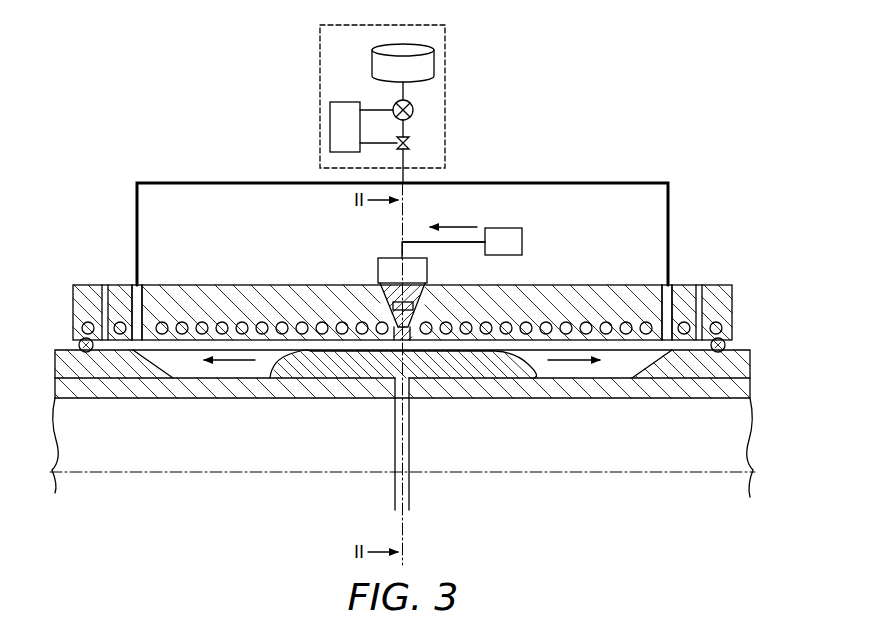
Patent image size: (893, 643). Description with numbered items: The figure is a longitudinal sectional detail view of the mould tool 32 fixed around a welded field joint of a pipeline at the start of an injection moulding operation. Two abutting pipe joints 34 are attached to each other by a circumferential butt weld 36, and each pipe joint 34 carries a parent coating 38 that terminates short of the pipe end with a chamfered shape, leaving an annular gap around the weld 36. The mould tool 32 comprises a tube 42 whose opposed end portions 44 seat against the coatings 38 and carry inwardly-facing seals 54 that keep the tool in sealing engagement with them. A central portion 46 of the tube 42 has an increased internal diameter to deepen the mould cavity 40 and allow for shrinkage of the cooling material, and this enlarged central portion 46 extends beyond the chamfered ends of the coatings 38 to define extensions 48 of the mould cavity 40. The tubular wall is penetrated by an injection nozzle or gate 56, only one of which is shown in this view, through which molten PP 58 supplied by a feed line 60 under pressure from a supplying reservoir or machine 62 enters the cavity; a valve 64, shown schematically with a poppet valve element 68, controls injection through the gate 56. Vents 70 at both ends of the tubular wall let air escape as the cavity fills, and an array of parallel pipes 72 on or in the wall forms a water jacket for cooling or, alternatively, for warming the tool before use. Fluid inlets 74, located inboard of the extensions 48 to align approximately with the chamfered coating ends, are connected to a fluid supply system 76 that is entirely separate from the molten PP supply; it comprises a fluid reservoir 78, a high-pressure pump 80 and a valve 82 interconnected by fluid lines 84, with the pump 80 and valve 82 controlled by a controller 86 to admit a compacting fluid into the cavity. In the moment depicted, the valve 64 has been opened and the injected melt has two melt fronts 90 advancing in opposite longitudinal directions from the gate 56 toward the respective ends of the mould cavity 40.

The mould tool 32 is at (65, 253).
The pipe joints 34 is at (120, 472).
The circumferential butt weld 36 is at (409, 440).
The 5LPP coating 38 is at (55, 360).
The mould cavity 40 is at (612, 372).
The tube 42 is at (306, 278).
The end portions 44 is at (73, 290).
The central portion 46 is at (185, 345).
The extensions 48 is at (118, 345).
The inwardly-facing seals 54 is at (78, 345).
The injection nozzles or gates 56 is at (412, 322).
The molten PP 58 is at (345, 396).
The feed lines 60 is at (418, 242).
The supplying reservoir or machine 62 is at (522, 232).
The valve 64 is at (388, 258).
The poppet valve elements 68 is at (385, 292).
The vents 70 is at (105, 287).
The parallel pipes 72 is at (262, 325).
The fluid inlets 74 is at (145, 303).
The fluid supply system 76 is at (445, 70).
The fluid reservoir 78 is at (372, 60).
The high-pressure pump 80 is at (413, 108).
The valve 82 is at (409, 143).
The fluid lines 84 is at (235, 183).
The controller 86 is at (330, 127).
The melt fronts 90 is at (268, 345).